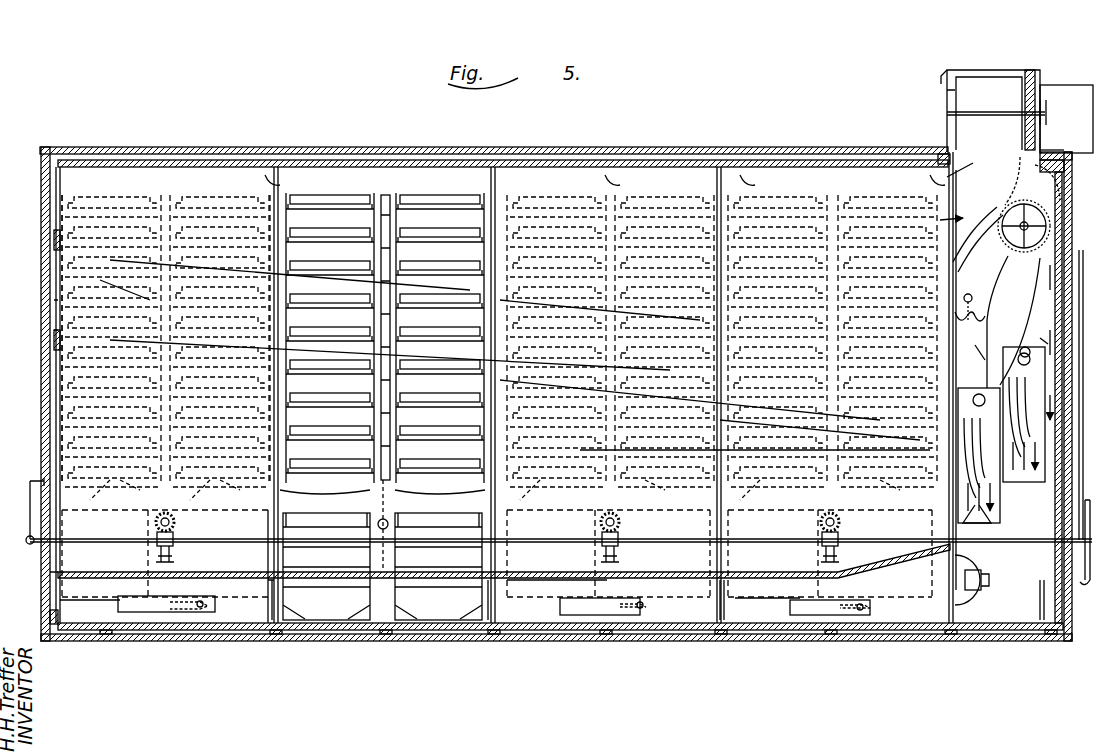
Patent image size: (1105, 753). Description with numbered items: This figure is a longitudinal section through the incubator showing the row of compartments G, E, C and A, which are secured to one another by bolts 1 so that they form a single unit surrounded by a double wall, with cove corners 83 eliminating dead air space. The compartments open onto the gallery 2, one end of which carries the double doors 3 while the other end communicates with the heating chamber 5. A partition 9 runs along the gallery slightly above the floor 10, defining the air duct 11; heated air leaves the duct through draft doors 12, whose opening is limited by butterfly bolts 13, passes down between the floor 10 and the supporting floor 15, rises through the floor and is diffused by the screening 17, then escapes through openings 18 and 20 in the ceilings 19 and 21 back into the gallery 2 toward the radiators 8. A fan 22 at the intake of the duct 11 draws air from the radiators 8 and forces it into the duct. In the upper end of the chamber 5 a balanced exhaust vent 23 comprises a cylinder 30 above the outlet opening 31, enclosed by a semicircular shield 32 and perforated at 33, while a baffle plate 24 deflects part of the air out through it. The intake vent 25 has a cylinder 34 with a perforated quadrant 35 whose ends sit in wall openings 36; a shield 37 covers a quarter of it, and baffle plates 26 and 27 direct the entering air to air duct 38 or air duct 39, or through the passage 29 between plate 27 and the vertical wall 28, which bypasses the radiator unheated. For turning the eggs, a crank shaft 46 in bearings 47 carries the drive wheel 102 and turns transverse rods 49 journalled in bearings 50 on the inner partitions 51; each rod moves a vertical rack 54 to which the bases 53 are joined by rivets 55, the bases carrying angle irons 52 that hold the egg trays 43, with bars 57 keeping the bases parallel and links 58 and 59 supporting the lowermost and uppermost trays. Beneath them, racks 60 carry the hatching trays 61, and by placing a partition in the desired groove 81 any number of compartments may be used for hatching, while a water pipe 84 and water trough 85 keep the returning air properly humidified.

The bolt 1 is at (265, 154).
The gallery 2 is at (808, 154).
The double door 3 is at (53, 312).
The heating chamber 5 is at (1035, 625).
The radiator 8 is at (1002, 482).
The partition 9 is at (222, 585).
The floor 10 is at (565, 630).
The air duct 11 is at (230, 615).
The draft door 12 is at (125, 597).
The butterfly bolt 13 is at (881, 574).
The supporting floor 15 is at (105, 632).
The screening 17 is at (338, 625).
The ceiling opening 18 is at (28, 482).
The ceiling 19 is at (344, 154).
The ceiling opening 20 is at (675, 160).
The ceiling 21 is at (427, 154).
The fan 22 is at (986, 580).
The exhaust vent 23 is at (1000, 76).
The baffle plate 24 is at (975, 228).
The intake vent 25 is at (1029, 181).
The baffle plate 26 is at (1015, 280).
The baffle plate 27 is at (1043, 317).
The vertical wall 28 is at (1035, 480).
The air passage 29 is at (1029, 336).
The cylinder 30 is at (967, 80).
The outlet opening 31 is at (1040, 150).
The semicircular shield 32 is at (1027, 76).
The perforations 33 is at (980, 148).
The cylinder 34 is at (1022, 243).
The perforated portion 35 is at (1025, 226).
The wall opening 36 is at (1013, 226).
The shield 37 is at (950, 220).
The air duct 38 is at (956, 315).
The air duct 39 is at (1010, 262).
The egg tray 43 is at (150, 207).
The crank shaft 46 is at (242, 540).
The bearing 47 is at (166, 556).
The rod 49 is at (176, 518).
The bearing 50 is at (265, 494).
The inner partition 51 is at (275, 495).
The angle iron 52 is at (510, 207).
The base 53 is at (50, 282).
The rack 54 is at (385, 208).
The rivets or bolts 55 is at (380, 482).
The bar 57 is at (52, 342).
The link 58 is at (489, 497).
The link 59 is at (155, 210).
The rack 60 is at (60, 583).
The hatching tray 61 is at (435, 620).
The groove 81 is at (265, 602).
The cove corner 83 is at (56, 194).
The water pipe 84 is at (967, 321).
The water trough 85 is at (970, 358).
The drive wheel 102 is at (1070, 642).
The compartment G is at (143, 154).
The compartment E is at (474, 154).
The compartment C is at (647, 154).
The compartment A is at (863, 154).